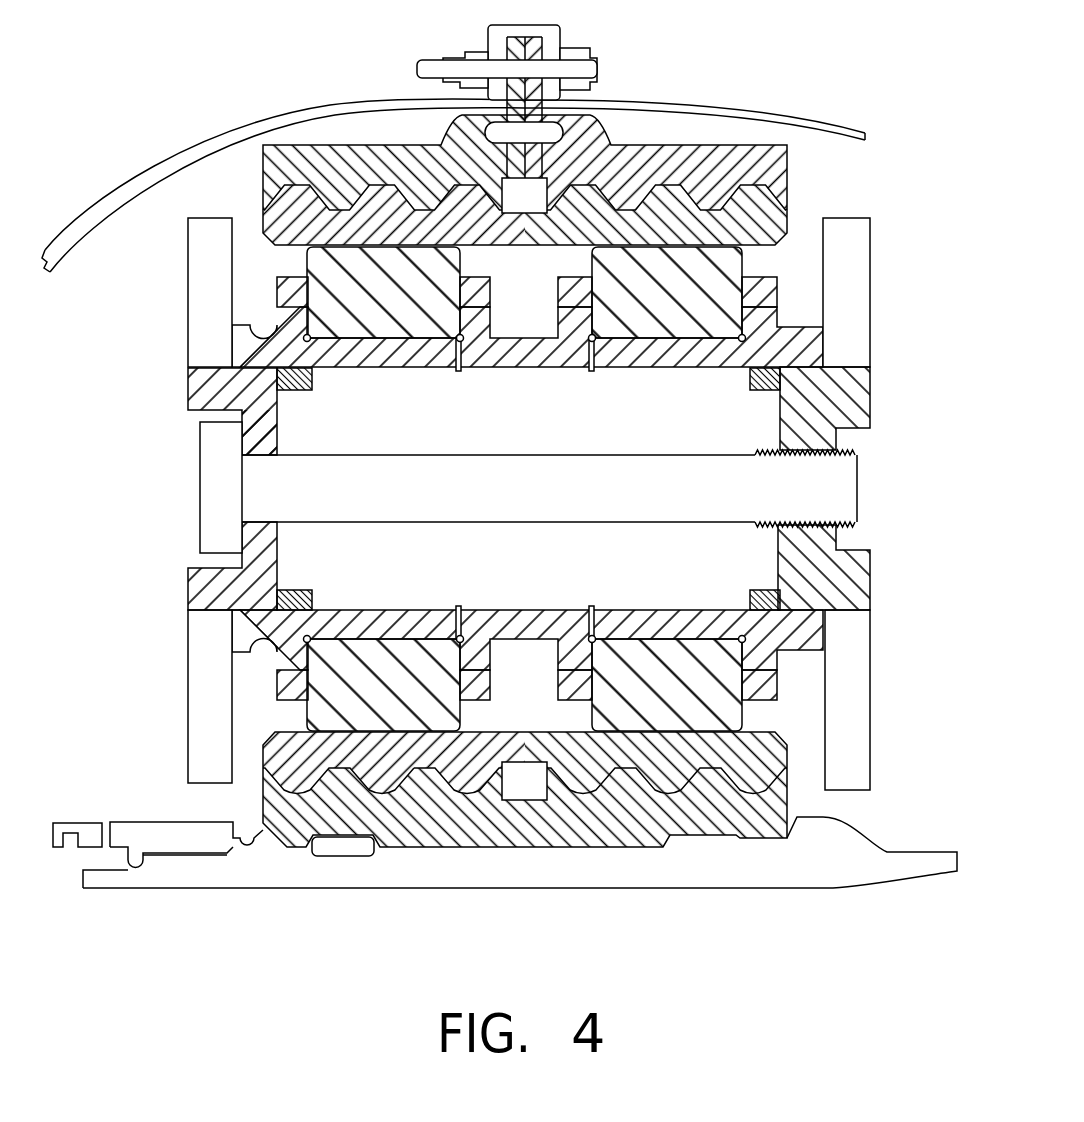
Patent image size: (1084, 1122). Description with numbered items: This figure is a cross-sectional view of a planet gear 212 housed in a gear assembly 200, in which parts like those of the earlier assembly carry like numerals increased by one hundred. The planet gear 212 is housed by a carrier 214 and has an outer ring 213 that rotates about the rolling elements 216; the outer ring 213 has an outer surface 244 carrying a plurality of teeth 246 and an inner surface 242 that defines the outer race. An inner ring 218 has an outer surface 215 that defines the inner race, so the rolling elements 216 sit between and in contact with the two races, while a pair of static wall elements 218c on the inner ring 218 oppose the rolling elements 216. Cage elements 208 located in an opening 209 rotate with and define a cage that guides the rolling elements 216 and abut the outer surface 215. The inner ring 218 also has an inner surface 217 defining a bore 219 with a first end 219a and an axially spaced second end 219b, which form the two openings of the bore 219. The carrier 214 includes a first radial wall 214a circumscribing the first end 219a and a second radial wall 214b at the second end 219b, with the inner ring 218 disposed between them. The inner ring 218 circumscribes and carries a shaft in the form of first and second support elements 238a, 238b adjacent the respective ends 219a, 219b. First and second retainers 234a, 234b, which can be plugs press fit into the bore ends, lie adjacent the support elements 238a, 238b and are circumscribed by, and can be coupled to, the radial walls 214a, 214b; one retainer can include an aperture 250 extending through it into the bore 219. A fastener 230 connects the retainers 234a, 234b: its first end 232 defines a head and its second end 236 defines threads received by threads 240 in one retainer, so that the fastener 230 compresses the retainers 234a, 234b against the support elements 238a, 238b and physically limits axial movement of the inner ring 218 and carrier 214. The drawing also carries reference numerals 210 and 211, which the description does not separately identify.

The gear assembly 200 is at (243, 75).
The cage elements 208 is at (578, 288).
The opening 209 is at (582, 710).
The upper housing 210 is at (688, 158).
The lower housing 211 is at (682, 823).
The planet gear 212 is at (231, 789).
The outer ring 213 is at (762, 765).
The carrier 214 is at (892, 265).
The first radial wall 214a is at (183, 702).
The second radial wall 214b is at (940, 322).
The outer surface 215 is at (635, 668).
The rolling elements 216 is at (366, 314).
The inner surface 217 is at (668, 622).
The inner ring 218 is at (408, 617).
The static wall elements 218c is at (580, 318).
The bore 219 is at (703, 604).
The first end 219a is at (270, 606).
The second end 219b is at (774, 579).
The fastener 230 is at (465, 487).
The first end 232 is at (200, 488).
The first retainer 234a is at (228, 396).
The second retainer 234b is at (850, 406).
The second end 236 is at (830, 488).
The first support element 238a is at (278, 596).
The second support element 238b is at (762, 610).
The threads 240 is at (812, 457).
The inner surface 242 is at (362, 712).
The outer surface 244 is at (386, 763).
The teeth 246 is at (463, 799).
The aperture 250 is at (187, 436).